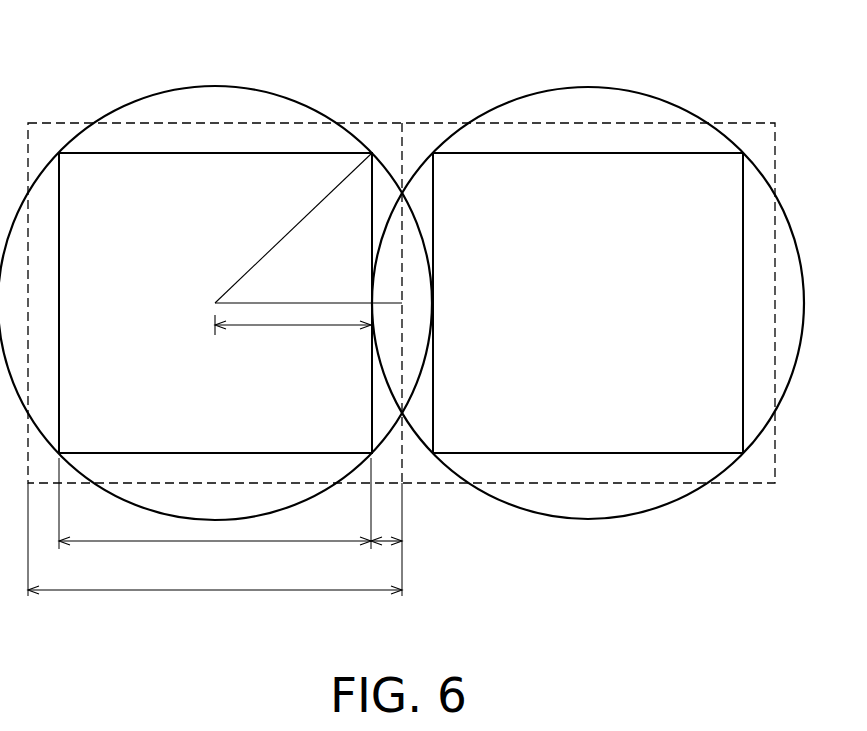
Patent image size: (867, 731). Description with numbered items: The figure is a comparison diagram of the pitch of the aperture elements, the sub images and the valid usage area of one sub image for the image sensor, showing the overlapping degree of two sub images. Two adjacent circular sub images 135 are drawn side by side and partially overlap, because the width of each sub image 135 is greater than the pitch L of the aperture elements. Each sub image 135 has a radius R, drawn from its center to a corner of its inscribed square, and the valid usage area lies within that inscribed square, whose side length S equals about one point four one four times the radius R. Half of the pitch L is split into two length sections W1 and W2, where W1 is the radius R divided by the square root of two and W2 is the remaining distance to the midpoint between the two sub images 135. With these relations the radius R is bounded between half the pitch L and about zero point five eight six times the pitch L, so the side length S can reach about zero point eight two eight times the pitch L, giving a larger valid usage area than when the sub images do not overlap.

The sub image 135 is at (312, 108).
The radius of the sub image R is at (308, 228).
The length section W1 is at (293, 337).
The side length of the inscribed square S is at (215, 519).
The length section W2 is at (385, 561).
The pitch of the aperture elements L is at (215, 556).